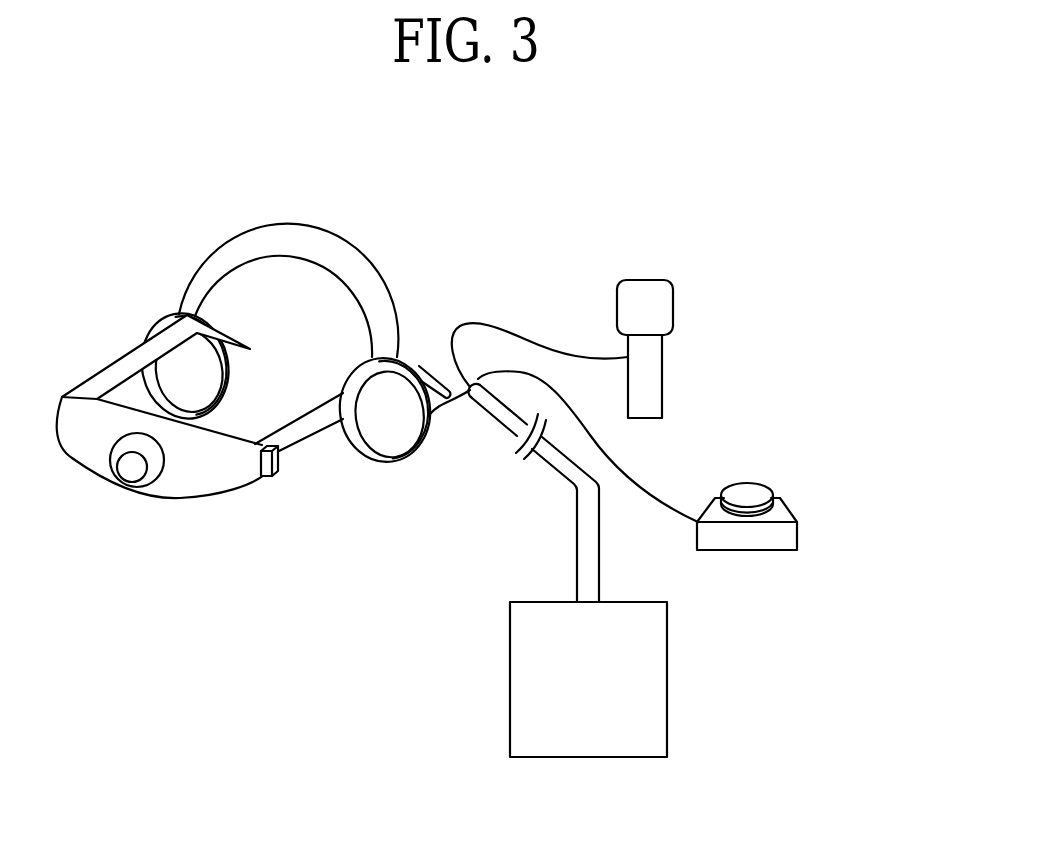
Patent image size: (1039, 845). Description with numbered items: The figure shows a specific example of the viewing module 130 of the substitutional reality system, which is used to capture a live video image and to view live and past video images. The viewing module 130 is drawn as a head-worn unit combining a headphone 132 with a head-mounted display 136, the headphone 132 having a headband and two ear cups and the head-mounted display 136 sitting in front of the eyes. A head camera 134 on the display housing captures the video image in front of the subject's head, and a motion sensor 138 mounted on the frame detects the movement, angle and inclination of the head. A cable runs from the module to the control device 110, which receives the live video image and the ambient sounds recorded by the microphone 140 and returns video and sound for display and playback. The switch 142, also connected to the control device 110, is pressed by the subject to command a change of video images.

The control device 110 is at (667, 643).
The viewing module 130 is at (797, 203).
The headphone 132 is at (365, 275).
The head camera 134 is at (128, 470).
The head-mounted display 136 is at (104, 372).
The motion sensor 138 is at (280, 453).
The microphone 140 is at (658, 348).
The switch 142 is at (797, 511).